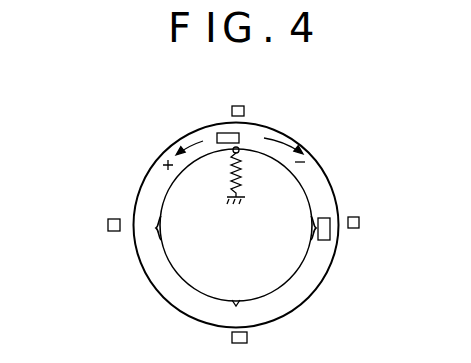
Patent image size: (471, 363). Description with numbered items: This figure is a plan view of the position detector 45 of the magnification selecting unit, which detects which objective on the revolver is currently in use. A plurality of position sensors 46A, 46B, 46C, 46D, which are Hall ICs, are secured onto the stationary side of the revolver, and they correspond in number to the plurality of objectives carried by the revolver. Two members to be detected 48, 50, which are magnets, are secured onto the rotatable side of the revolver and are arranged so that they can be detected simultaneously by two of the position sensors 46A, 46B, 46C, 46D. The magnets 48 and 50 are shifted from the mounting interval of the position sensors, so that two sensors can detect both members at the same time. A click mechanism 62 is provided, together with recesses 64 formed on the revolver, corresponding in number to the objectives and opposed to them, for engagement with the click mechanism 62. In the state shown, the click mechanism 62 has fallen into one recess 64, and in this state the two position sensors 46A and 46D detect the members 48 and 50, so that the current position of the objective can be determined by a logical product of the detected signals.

The position detector 45 is at (119, 268).
The position sensor 46A is at (244, 108).
The position sensor 46B is at (110, 219).
The position sensor 46C is at (247, 337).
The position sensor 46D is at (358, 217).
The member to be detected 48 is at (239, 138).
The member to be detected 50 is at (324, 218).
The click mechanism 62 is at (239, 152).
The recess 64 is at (238, 298).